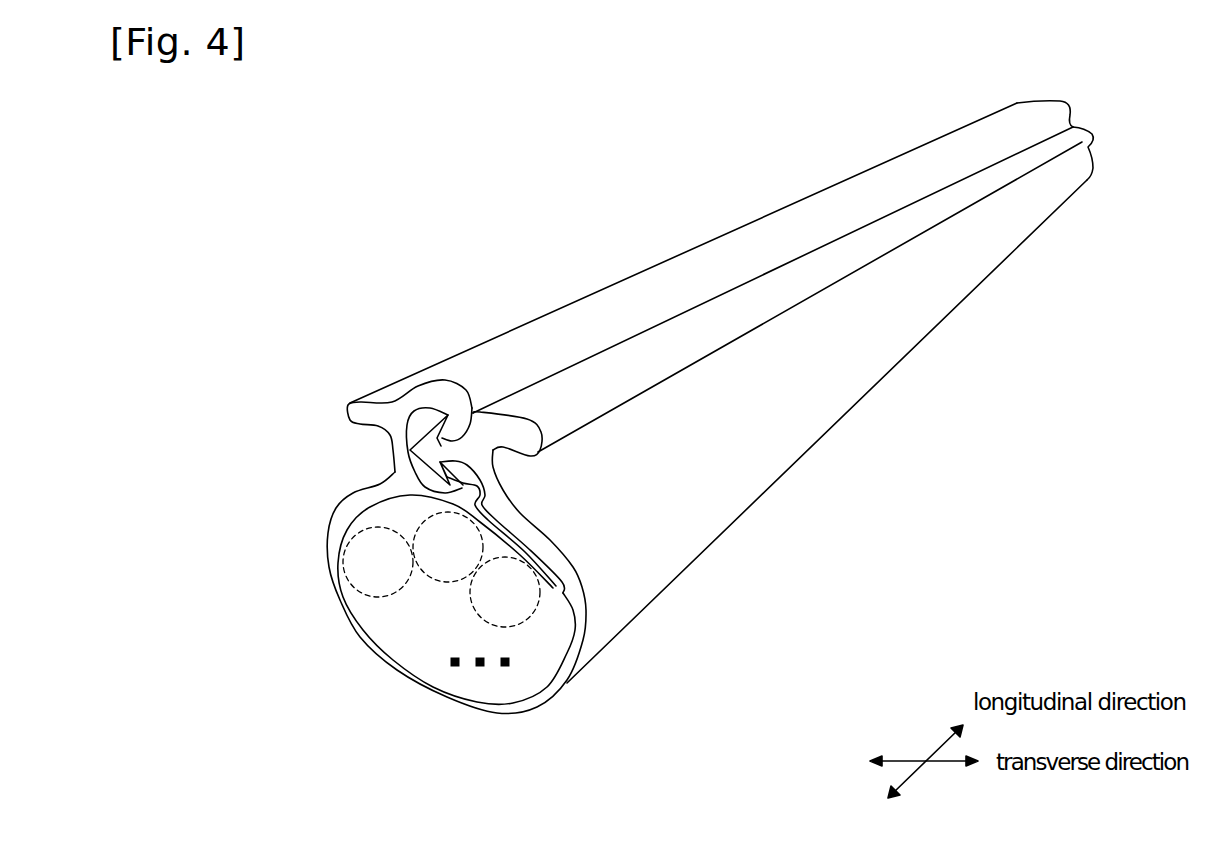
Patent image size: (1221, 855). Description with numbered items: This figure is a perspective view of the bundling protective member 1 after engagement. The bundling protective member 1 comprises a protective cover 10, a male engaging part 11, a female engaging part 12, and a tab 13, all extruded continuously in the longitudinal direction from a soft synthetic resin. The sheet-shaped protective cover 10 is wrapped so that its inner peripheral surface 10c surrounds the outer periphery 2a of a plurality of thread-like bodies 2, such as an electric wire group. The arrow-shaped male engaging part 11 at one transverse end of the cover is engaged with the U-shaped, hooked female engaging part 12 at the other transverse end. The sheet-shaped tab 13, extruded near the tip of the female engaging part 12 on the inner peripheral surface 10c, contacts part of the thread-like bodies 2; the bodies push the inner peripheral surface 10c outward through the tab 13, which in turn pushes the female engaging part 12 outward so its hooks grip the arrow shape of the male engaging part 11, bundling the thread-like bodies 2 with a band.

The bundling protective member 1 is at (543, 201).
The thread-like bodies 2 is at (485, 623).
The outer periphery of the thread-like bodies 2a is at (342, 570).
The protective cover 10 is at (718, 505).
The inner peripheral surface 10c is at (342, 537).
The male engaging part 11 is at (568, 403).
The female engaging part 12 is at (468, 362).
The tab 13 is at (540, 558).